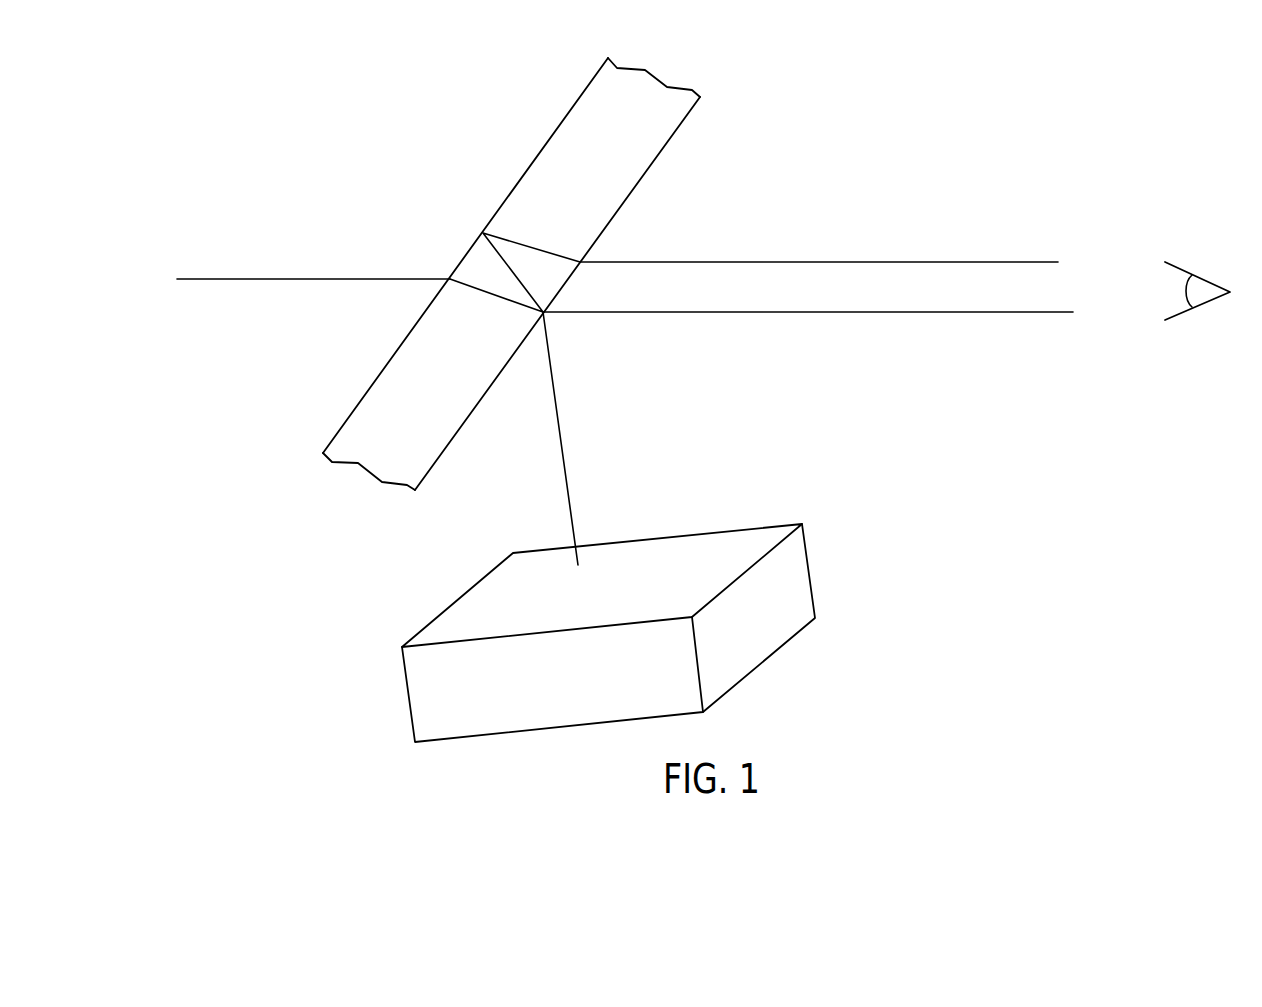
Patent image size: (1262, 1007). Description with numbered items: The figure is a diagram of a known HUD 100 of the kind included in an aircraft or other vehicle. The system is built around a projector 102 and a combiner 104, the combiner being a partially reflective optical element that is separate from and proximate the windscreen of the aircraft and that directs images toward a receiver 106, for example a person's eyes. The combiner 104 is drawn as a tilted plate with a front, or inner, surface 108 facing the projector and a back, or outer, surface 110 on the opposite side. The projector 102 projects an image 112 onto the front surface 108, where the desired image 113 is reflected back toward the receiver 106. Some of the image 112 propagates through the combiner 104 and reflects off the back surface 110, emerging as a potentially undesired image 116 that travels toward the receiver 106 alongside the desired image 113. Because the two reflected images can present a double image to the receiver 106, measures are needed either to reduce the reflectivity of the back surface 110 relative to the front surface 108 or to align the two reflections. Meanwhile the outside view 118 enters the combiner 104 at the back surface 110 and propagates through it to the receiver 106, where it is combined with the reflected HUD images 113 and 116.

The HUD 100 is at (938, 122).
The projector 102 is at (403, 692).
The combiner 104 is at (568, 141).
The receiver 106 is at (1205, 278).
The front surface 108 is at (445, 450).
The back surface 110 is at (382, 370).
The image 112 is at (570, 487).
The desired image 113 is at (943, 313).
The undesired image 116 is at (958, 262).
The outside view 118 is at (203, 278).